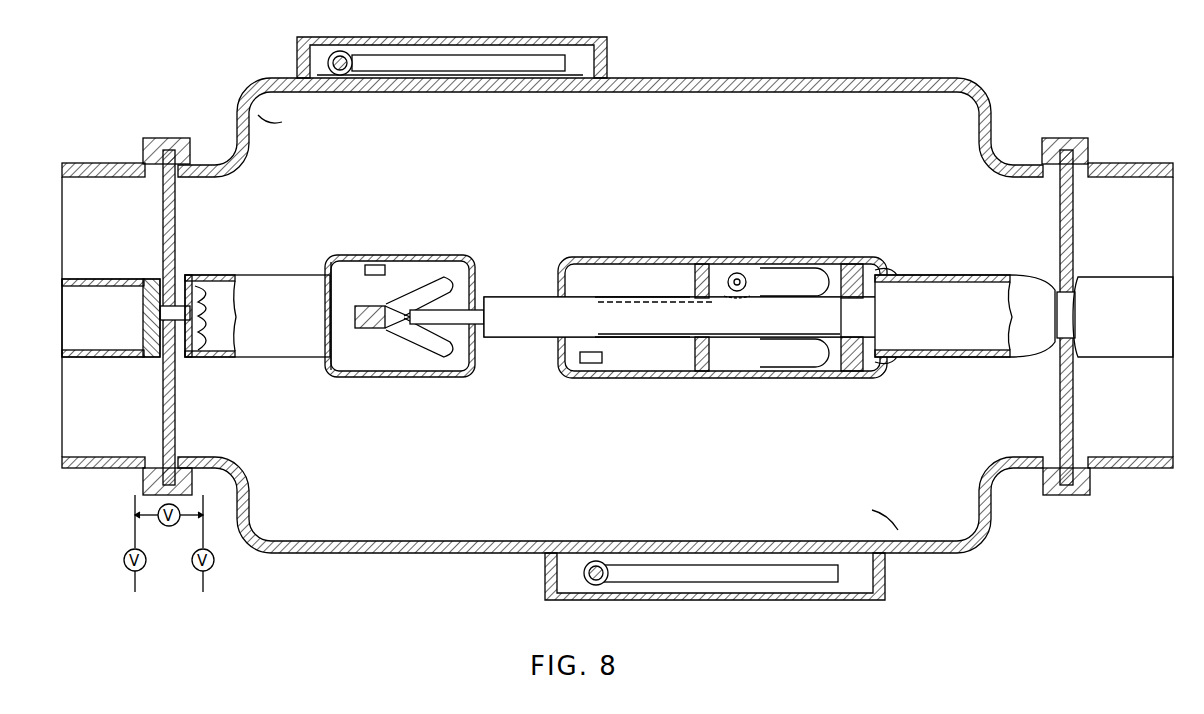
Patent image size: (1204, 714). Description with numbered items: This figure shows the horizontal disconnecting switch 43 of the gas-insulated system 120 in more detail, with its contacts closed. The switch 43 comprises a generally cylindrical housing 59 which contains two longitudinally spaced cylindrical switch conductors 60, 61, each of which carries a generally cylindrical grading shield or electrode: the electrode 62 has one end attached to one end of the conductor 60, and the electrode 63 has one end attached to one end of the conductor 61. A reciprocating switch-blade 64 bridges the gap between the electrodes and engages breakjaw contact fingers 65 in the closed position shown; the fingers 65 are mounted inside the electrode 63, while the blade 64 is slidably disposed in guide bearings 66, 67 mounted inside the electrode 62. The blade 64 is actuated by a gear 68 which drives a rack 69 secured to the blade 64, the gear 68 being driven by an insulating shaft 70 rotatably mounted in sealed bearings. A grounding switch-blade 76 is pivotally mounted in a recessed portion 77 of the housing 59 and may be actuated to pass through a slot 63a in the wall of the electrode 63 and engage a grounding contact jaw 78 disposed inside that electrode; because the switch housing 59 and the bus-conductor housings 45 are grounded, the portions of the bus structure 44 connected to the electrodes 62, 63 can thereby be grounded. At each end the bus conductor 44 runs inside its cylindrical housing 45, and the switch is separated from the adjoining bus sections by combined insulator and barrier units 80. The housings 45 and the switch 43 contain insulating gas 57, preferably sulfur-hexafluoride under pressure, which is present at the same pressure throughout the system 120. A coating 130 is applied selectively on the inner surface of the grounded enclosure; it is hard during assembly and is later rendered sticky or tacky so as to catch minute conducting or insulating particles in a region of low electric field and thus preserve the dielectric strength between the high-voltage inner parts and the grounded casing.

The horizontal disconnect switch 43 is at (764, 66).
The bus conductor 44 is at (106, 279).
The cylindrical housing 45 is at (98, 163).
The insulating gas 57 is at (651, 105).
The cylindrical housing 59 is at (455, 553).
The switch conductor 60 is at (952, 357).
The switch conductor 61 is at (262, 357).
The grading shield or electrode 62 is at (622, 257).
The grading shield or electrode 63 is at (414, 255).
The slot 63a is at (352, 258).
The switch-blade 64 is at (534, 297).
The breakjaw contact fingers 65 is at (448, 283).
The guide bearing 66 is at (700, 300).
The guide bearing 67 is at (846, 298).
The gear 68 is at (747, 282).
The rack 69 is at (660, 306).
The insulating shaft 70 is at (740, 278).
The grounding switch-blade 76 is at (420, 58).
The recessed portion 77 is at (586, 45).
The grounding contact jaw 78 is at (378, 265).
The combined insulator and barrier unit 80 is at (176, 235).
The system 120 is at (258, 112).
The coating 130 is at (520, 541).